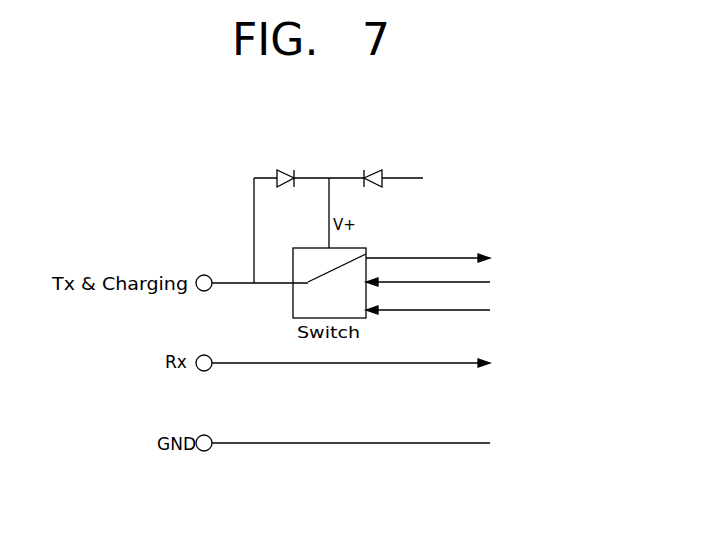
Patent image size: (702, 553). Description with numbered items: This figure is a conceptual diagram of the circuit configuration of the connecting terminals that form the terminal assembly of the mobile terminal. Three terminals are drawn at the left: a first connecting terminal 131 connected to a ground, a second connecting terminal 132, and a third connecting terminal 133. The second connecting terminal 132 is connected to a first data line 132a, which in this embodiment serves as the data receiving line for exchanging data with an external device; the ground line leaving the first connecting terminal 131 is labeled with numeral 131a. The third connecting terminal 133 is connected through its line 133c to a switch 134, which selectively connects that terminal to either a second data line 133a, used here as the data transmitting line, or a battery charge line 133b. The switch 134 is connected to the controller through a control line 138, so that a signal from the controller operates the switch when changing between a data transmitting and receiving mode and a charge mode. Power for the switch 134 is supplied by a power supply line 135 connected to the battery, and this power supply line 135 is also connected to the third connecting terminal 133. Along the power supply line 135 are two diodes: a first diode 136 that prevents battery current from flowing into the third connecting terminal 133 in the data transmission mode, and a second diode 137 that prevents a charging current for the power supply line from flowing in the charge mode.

The first connecting terminal 131 is at (197, 450).
The GND line 131a is at (407, 446).
The second connecting terminal 132 is at (197, 370).
The first data line 132a is at (406, 366).
The third connecting terminal 133 is at (197, 290).
The second data line 133a is at (463, 282).
The battery charge line 133b is at (440, 258).
The Tx & Charging line 133c is at (270, 285).
The switch 134 is at (366, 254).
The power supply line 135 is at (407, 177).
The first diode 136 is at (285, 170).
The second diode 137 is at (372, 170).
The control line 138 is at (463, 310).